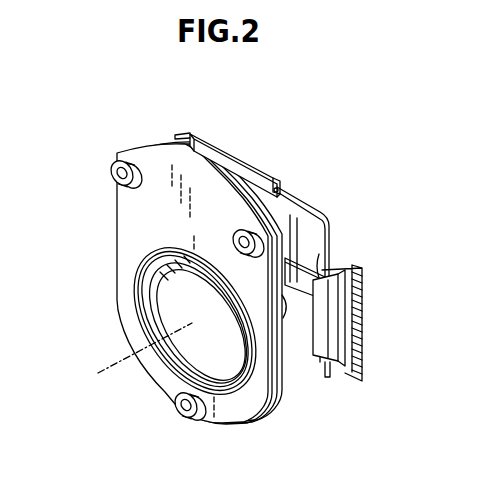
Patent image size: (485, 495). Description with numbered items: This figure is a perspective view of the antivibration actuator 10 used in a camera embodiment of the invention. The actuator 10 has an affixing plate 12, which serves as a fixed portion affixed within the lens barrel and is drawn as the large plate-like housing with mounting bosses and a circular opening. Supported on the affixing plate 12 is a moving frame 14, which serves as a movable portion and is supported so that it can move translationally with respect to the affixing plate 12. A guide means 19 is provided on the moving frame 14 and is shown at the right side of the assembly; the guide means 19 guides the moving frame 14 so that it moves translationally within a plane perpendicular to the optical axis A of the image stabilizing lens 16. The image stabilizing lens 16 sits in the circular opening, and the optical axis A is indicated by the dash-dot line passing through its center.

The antivibration actuator 10 is at (260, 133).
The affixing plate 12 is at (134, 223).
The moving frame 14 is at (292, 220).
The image stabilizing lens 16 is at (190, 305).
The guide means 19 is at (335, 238).
The optical axis A is at (99, 374).